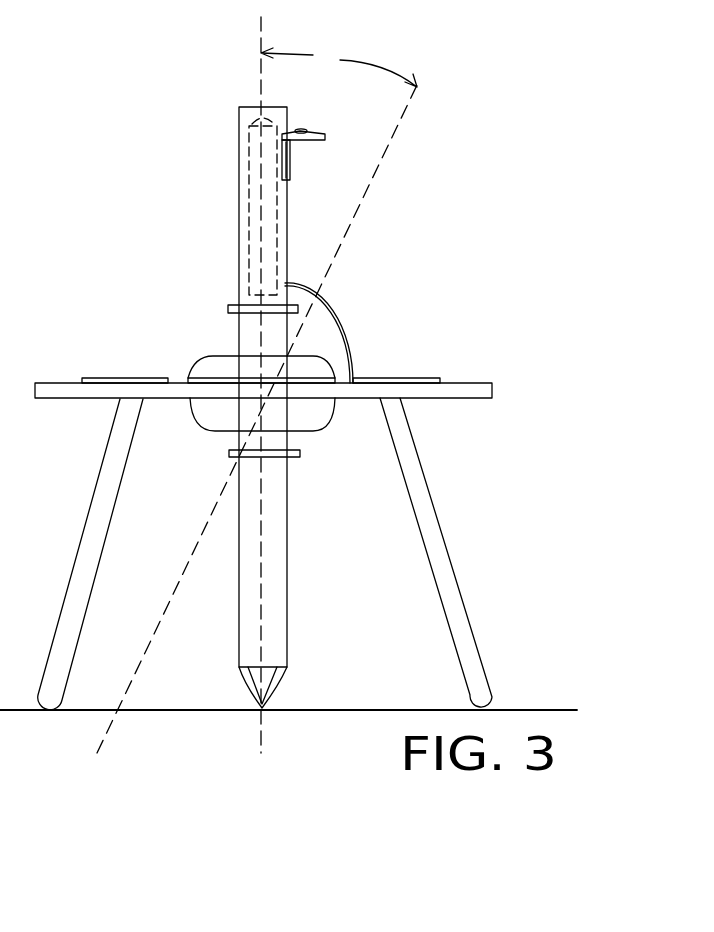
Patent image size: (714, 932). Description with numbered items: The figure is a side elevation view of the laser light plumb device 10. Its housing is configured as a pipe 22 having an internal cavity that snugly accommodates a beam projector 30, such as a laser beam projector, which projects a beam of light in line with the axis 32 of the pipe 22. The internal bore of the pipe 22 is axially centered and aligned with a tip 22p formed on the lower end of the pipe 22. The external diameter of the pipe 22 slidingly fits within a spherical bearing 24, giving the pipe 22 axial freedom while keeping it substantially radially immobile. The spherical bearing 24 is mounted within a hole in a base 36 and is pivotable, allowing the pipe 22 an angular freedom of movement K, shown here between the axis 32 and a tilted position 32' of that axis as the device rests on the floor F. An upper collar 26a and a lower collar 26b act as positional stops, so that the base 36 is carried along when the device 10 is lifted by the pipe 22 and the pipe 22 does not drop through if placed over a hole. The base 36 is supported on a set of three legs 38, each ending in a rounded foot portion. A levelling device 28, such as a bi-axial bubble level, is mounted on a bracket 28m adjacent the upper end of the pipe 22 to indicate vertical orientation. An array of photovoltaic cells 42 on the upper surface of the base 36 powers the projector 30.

The laser light plumb device 10 is at (450, 230).
The pipe 22 is at (246, 407).
The tip 22p is at (276, 681).
The spherical bearing 24 is at (203, 366).
The upper collar 26a is at (228, 308).
The lower collar 26b is at (300, 457).
The levelling device 28 is at (331, 138).
The bracket 28m is at (347, 172).
The beam projector 30 is at (250, 160).
The axis 32 is at (225, 383).
The tilted laser axis 32' is at (307, 406).
The base 36 is at (470, 382).
The legs 38 is at (443, 510).
The photovoltaic cells 42 is at (415, 378).
The angular freedom of movement K is at (339, 64).
The floor F is at (535, 710).